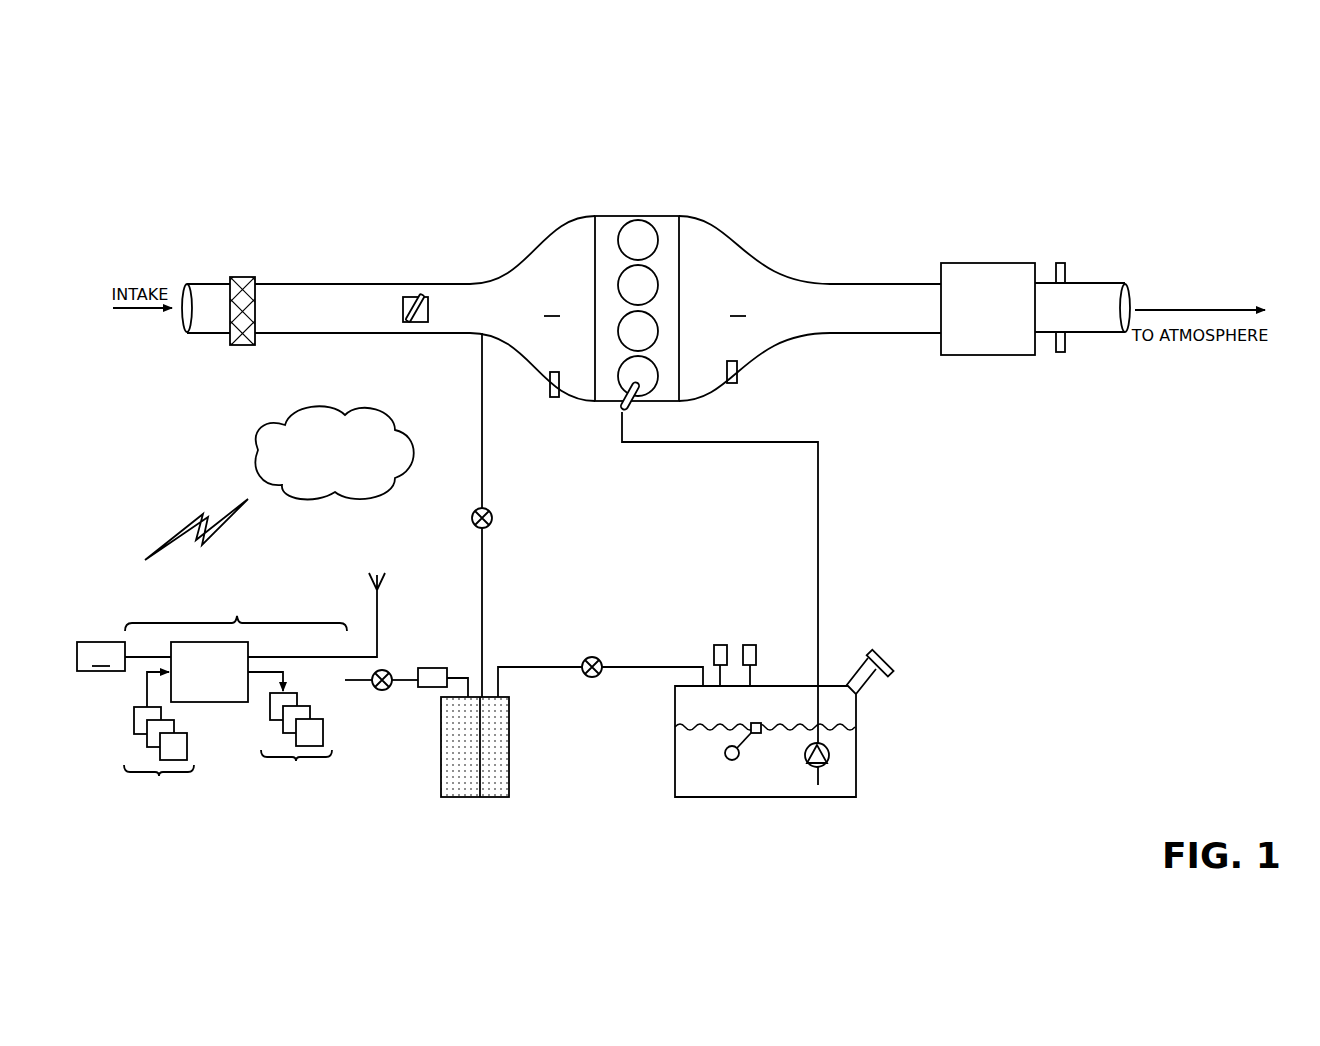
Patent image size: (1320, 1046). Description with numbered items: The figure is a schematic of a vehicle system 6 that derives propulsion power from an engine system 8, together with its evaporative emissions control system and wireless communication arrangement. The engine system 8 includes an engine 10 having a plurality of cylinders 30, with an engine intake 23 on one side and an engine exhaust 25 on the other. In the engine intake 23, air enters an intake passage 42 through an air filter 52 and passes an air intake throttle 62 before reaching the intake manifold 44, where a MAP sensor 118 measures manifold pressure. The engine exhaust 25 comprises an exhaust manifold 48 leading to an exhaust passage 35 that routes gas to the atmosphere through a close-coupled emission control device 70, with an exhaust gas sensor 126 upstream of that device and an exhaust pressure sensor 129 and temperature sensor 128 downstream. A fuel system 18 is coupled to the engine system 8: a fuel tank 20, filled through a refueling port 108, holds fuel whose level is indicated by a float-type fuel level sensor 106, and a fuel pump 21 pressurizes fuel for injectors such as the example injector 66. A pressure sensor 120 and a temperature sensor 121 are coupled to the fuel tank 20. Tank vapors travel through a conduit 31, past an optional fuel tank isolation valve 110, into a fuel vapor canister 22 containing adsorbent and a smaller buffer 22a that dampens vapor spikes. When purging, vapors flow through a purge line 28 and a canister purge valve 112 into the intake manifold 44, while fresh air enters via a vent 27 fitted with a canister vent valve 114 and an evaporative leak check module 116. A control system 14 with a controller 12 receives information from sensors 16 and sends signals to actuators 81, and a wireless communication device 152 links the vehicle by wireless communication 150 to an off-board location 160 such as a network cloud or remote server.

The vehicle system 6 is at (202, 199).
The engine system 8 is at (1150, 196).
The engine 10 is at (679, 297).
The controller 12 is at (274, 661).
The control system 14 is at (236, 592).
The sensors 16 is at (135, 728).
The fuel system 18 is at (893, 815).
The fuel tank 20 is at (678, 797).
The fuel pump 21 is at (830, 757).
The fuel vapor canister 22 is at (448, 797).
The buffer 22a is at (497, 797).
The engine intake 23 is at (530, 240).
The engine exhaust 25 is at (780, 245).
The vent 27 is at (360, 680).
The purge line 28 is at (483, 485).
The cylinders 30 is at (655, 237).
The conduit 31 is at (635, 667).
The exhaust passage 35 is at (1110, 283).
The intake passage 42 is at (210, 333).
The intake manifold 44 is at (552, 307).
The exhaust manifold 48 is at (738, 307).
The air filter 52 is at (245, 277).
The air intake throttle 62 is at (428, 310).
The fuel injector 66 is at (635, 408).
The emission control device 70 is at (980, 263).
The actuators 81 is at (292, 736).
The fuel level sensor 106 is at (760, 723).
The refueling port 108 is at (888, 655).
The fuel tank isolation valve 110 is at (585, 658).
The canister purge valve 112 is at (490, 512).
The canister vent valve 114 is at (388, 671).
The evaporative leak check module 116 is at (437, 668).
The MAP sensor 118 is at (549, 374).
The pressure sensor 120 is at (756, 650).
The temperature sensor 121 is at (720, 645).
The exhaust gas sensor 126 is at (737, 363).
The temperature sensor 128 is at (1064, 350).
The exhaust pressure sensor 129 is at (1066, 268).
The wireless communication 150 is at (165, 522).
The wireless communication device 152 is at (385, 612).
The off-board location 160 is at (333, 500).